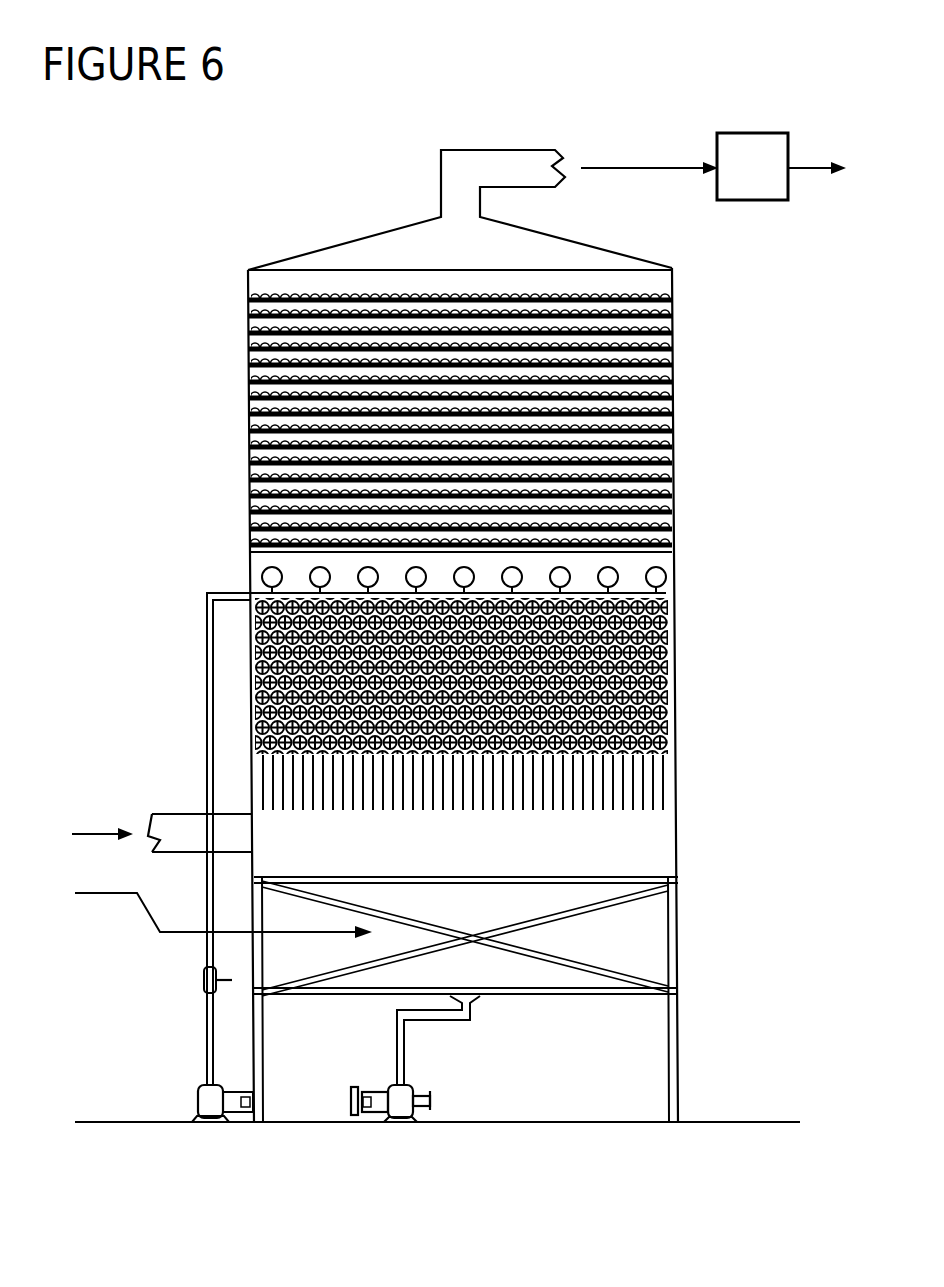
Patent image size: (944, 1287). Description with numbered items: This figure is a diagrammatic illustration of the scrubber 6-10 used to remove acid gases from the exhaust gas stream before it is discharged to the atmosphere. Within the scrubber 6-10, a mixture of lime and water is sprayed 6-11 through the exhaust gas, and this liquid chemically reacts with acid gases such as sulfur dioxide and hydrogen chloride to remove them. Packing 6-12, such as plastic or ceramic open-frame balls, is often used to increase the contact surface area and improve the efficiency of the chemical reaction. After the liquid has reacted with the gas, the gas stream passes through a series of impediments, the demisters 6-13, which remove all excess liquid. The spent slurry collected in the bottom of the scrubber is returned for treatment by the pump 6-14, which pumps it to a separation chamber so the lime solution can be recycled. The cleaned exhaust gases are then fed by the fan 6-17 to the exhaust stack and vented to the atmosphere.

The scrubber 6-10 is at (186, 299).
The spray 6-11 is at (262, 577).
The packed bed 6-12 is at (673, 648).
The demisters 6-13 is at (673, 440).
The pump 6-14 is at (430, 1100).
The fan 6-17 is at (777, 187).